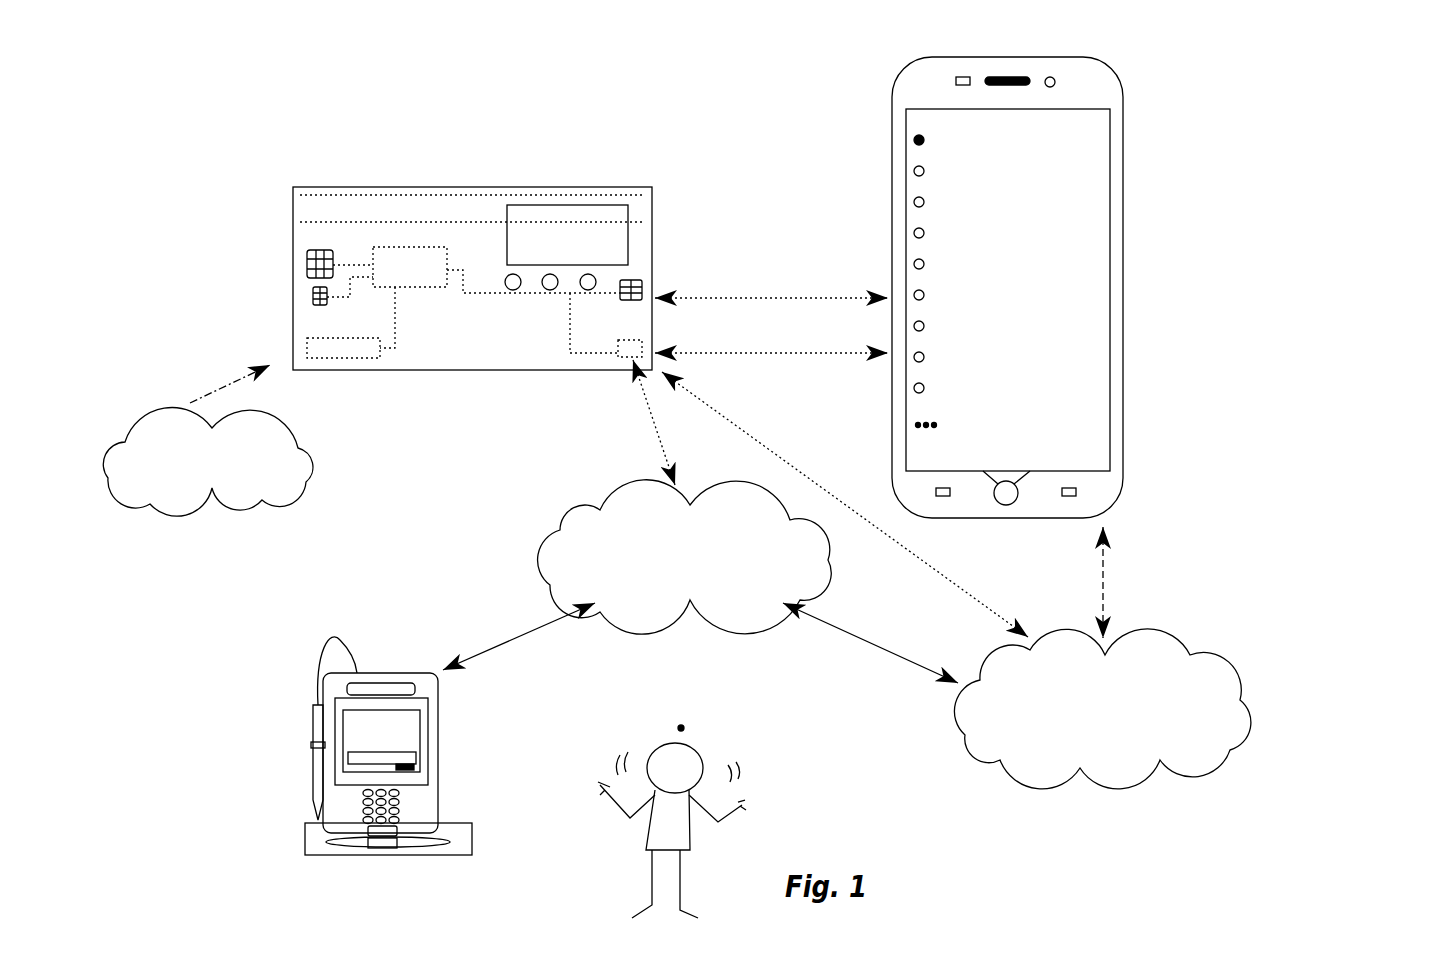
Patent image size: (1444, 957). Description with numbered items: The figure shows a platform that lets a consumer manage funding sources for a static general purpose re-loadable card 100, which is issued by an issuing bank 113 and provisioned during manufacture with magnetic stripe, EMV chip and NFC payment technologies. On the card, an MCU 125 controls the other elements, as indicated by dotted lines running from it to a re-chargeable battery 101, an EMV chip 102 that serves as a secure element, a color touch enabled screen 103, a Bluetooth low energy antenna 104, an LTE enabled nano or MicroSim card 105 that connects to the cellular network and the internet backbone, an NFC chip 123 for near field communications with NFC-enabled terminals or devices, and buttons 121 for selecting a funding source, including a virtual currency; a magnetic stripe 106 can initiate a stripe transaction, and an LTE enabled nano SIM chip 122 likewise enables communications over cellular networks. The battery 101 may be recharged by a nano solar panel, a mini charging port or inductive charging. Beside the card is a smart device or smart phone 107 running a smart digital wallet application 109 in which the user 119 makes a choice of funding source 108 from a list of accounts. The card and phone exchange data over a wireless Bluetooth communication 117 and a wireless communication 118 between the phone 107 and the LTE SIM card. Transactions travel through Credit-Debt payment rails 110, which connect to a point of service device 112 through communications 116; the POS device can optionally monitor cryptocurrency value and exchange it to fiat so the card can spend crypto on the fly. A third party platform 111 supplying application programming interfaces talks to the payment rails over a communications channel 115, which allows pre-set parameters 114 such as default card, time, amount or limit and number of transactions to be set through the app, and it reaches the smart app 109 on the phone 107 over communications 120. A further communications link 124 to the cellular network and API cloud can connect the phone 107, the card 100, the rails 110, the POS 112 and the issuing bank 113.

The static general purpose re-loadable card 100 is at (340, 187).
The re-chargeable battery 101 is at (305, 350).
The EMV chip 102 is at (307, 257).
The color touch enabled screen 103 is at (542, 193).
The Bluetooth low energy antenna 104 is at (655, 292).
The LTE enabled nano or MicroSim card 105 is at (625, 370).
The magnetic stripe 106 is at (363, 187).
The smart device or smart phone 107 is at (1007, 61).
The choice of funding source 108 is at (989, 404).
The smart digital wallet application 109 is at (946, 447).
The Credit-Debt payment rails 110 is at (593, 505).
The third party platform supplying APIs 111 is at (1012, 655).
The point of service device 112 is at (393, 668).
The issuing bank 113 is at (315, 460).
The pre-set parameters 114 is at (1215, 204).
The communications channel between third party API platform and payment rails 115 is at (818, 622).
The communications between point of service device and payment rails 116 is at (563, 620).
The wireless Bluetooth communication 117 is at (750, 298).
The wireless communications between smart phone and LTE SIM card 118 is at (745, 353).
The user 119 is at (762, 790).
The communications between third party API provider and smart app and smart phone 120 is at (1282, 547).
The buttons 121 is at (592, 274).
The LTE enabled nano SIM card/chip 122 is at (658, 447).
The NFC chip 123 is at (313, 299).
The communications channel/link 124 is at (745, 478).
The MCU 125 is at (483, 252).